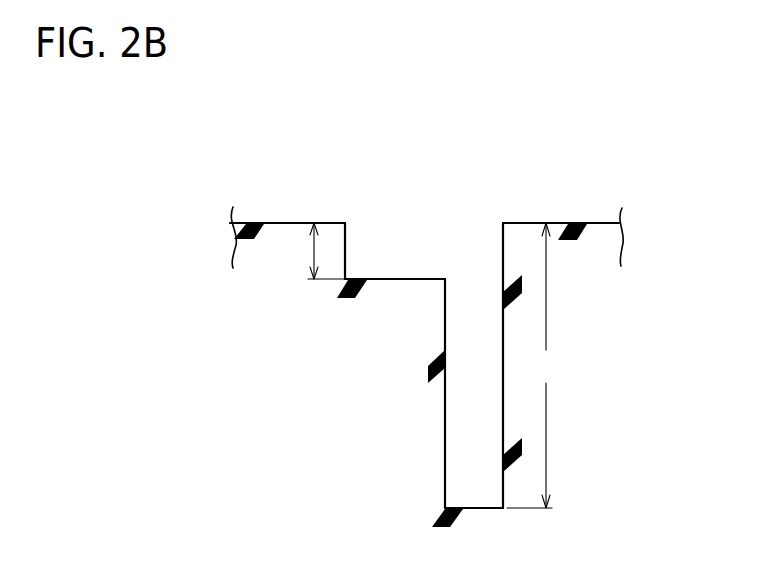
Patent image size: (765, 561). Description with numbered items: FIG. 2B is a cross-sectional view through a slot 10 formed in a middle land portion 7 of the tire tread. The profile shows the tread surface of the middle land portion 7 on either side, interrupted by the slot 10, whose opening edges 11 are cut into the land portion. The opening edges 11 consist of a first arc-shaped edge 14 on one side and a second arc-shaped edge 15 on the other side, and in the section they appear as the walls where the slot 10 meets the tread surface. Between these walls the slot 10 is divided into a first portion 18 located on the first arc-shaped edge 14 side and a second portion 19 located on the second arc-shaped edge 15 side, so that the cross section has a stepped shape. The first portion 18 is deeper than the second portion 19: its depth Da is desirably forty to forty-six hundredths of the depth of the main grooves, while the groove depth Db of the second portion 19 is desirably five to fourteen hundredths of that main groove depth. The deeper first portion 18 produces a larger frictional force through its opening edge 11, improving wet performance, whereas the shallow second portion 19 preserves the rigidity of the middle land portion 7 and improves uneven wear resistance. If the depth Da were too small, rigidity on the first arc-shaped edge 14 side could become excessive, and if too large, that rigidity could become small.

The middle land portion 7 is at (562, 222).
The slot 10 is at (374, 391).
The opening edge 11 is at (455, 309).
The first arc-shaped edge 14 is at (503, 222).
The second arc-shaped edge 15 is at (345, 222).
The first portion 18 is at (475, 478).
The second portion 19 is at (400, 255).
The depth of the first portion Da is at (533, 365).
The groove depth of the second portion Db is at (313, 247).